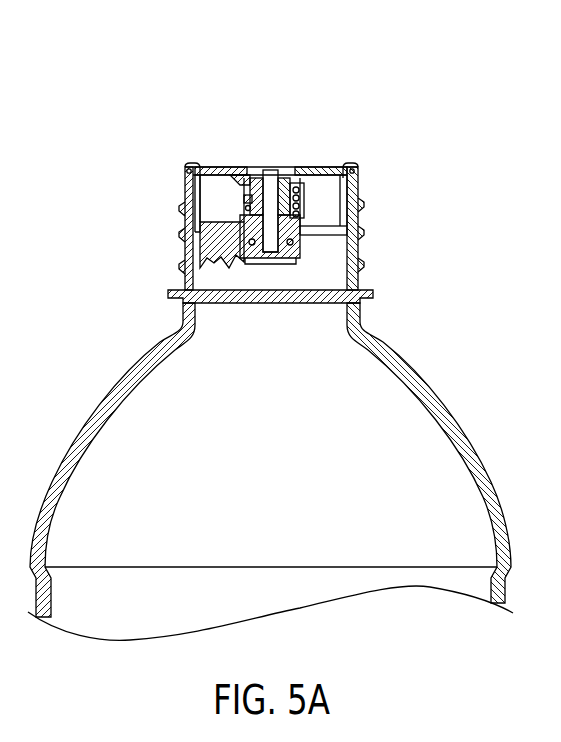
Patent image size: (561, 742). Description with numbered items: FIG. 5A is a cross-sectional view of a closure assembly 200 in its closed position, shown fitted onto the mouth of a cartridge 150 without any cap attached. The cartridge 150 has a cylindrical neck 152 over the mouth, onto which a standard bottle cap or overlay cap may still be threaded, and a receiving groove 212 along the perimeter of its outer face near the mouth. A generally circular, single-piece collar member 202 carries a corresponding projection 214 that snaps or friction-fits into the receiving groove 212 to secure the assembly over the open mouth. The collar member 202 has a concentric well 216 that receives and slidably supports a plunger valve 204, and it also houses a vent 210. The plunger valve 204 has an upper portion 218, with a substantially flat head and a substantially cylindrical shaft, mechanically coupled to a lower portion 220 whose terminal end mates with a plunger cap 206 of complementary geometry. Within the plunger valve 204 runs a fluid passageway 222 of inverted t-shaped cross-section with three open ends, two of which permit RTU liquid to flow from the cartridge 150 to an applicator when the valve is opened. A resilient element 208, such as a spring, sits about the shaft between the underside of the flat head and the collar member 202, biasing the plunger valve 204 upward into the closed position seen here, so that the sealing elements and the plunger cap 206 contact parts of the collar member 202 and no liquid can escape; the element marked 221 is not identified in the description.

The closure assembly 200 is at (132, 64).
The cartridge 150 is at (289, 463).
The cylindrical neck 152 is at (362, 251).
The collar member 202 is at (343, 166).
The plunger valve 204 is at (232, 170).
The plunger cap 206 is at (294, 240).
The resilient element 208 is at (249, 186).
The vent 210 is at (222, 253).
The receiving groove 212 is at (188, 184).
The projection 214 is at (186, 174).
The concentric well 216 is at (305, 198).
The upper portion 218 is at (288, 173).
The lower portion 220 is at (257, 247).
The seal 221 is at (242, 199).
The fluid passageway 222 is at (284, 245).